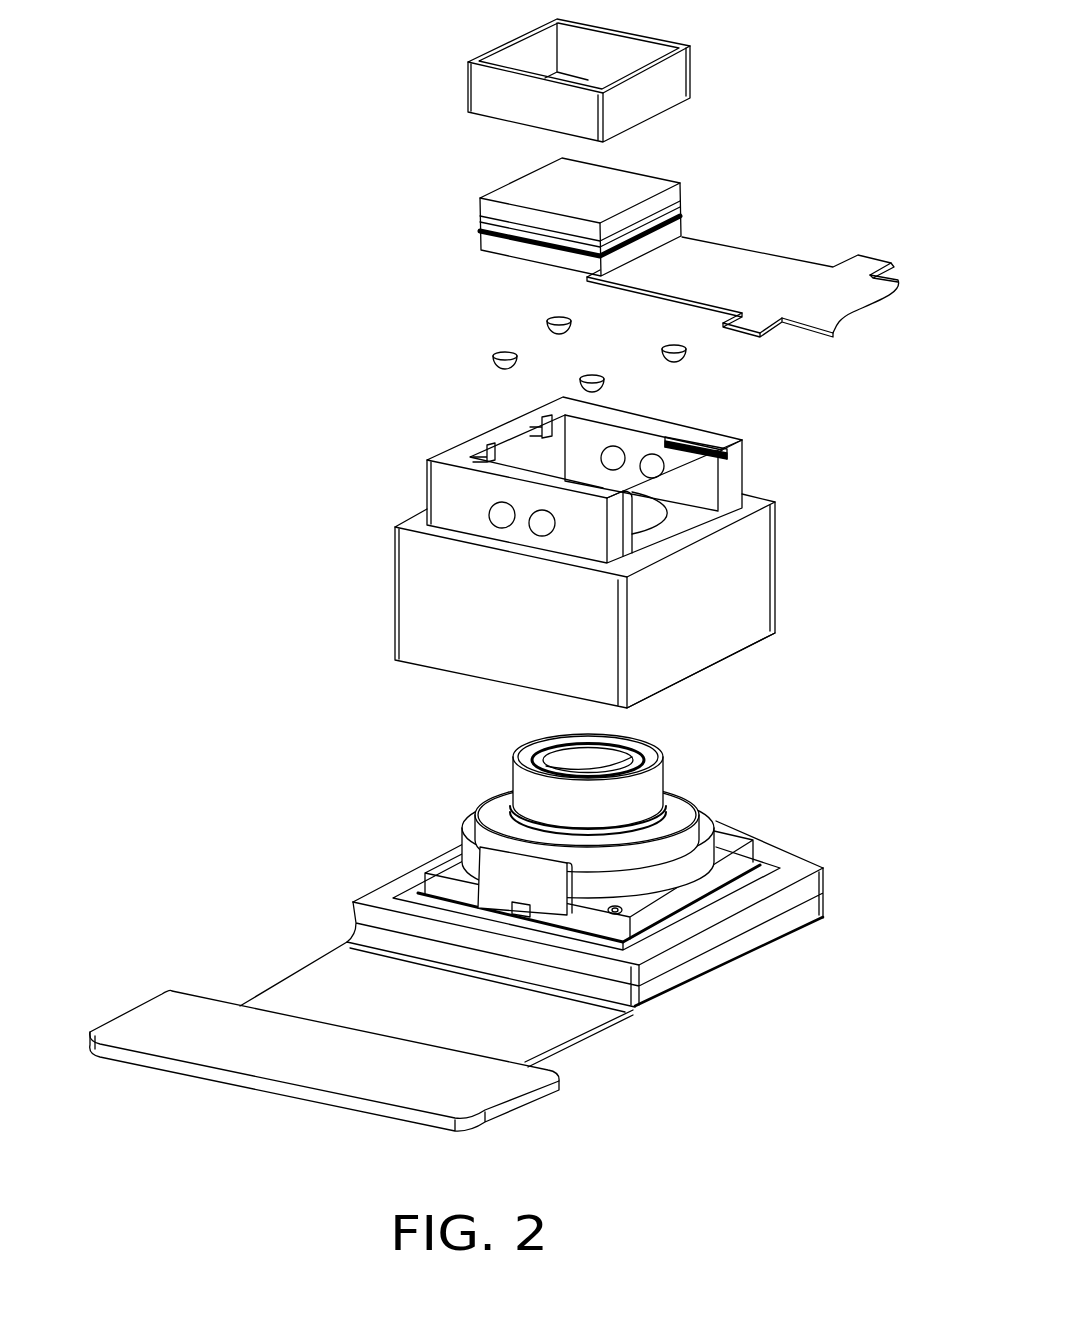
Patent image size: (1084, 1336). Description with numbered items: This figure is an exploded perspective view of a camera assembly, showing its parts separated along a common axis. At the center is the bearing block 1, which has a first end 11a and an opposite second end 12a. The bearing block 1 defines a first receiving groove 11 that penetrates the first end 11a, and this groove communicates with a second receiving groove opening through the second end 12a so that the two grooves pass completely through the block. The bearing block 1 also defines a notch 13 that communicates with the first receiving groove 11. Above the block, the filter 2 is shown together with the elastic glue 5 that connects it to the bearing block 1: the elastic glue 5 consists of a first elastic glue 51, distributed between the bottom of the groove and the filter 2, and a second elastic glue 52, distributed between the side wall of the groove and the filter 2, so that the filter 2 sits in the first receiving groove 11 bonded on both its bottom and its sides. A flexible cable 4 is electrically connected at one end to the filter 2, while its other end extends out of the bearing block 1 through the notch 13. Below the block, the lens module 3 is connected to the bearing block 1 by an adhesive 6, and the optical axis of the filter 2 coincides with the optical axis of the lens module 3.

The bearing block 1 is at (747, 593).
The first receiving groove 11 is at (531, 455).
The first end 11a is at (793, 403).
The second end 12a is at (753, 713).
The notch 13 is at (672, 489).
The filter 2 is at (630, 182).
The lens module 3 is at (690, 815).
The flexible cable 4 is at (722, 255).
The elastic glue 5 is at (370, 86).
The first elastic glue 51 is at (500, 343).
The second elastic glue 52 is at (483, 90).
The adhesive 6 is at (747, 883).